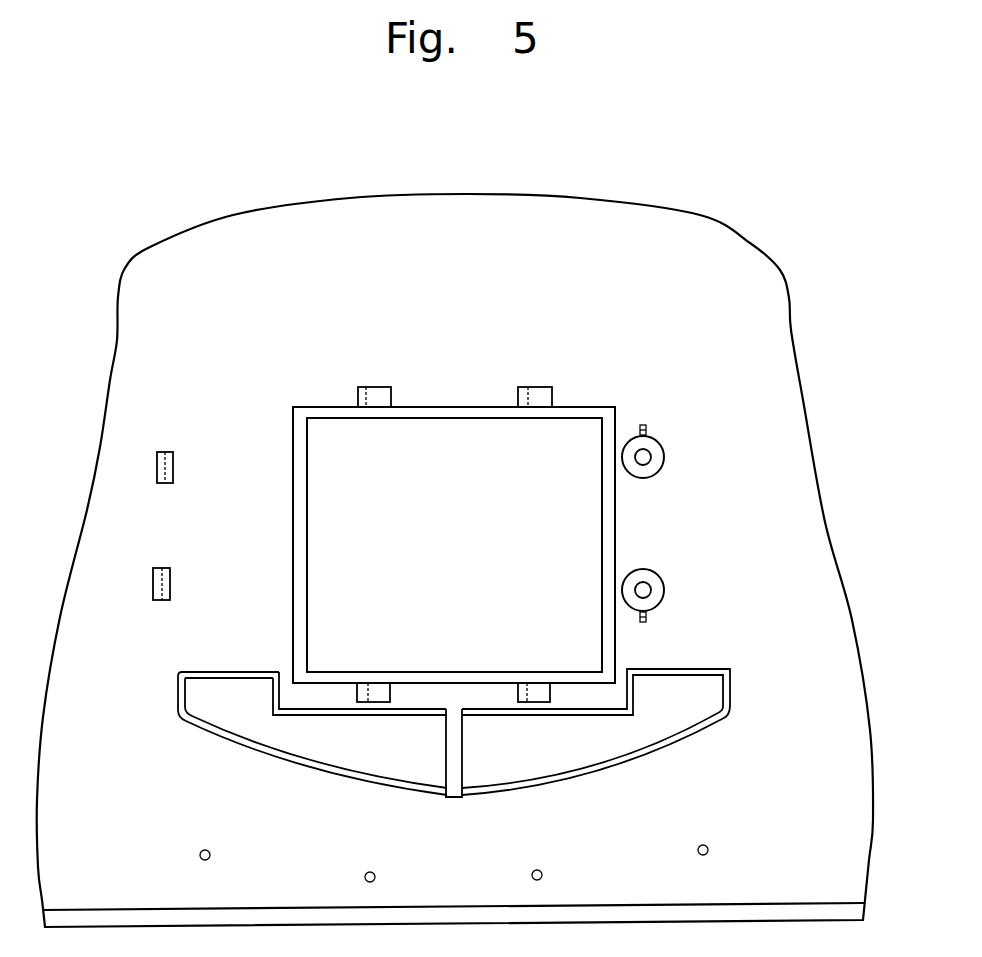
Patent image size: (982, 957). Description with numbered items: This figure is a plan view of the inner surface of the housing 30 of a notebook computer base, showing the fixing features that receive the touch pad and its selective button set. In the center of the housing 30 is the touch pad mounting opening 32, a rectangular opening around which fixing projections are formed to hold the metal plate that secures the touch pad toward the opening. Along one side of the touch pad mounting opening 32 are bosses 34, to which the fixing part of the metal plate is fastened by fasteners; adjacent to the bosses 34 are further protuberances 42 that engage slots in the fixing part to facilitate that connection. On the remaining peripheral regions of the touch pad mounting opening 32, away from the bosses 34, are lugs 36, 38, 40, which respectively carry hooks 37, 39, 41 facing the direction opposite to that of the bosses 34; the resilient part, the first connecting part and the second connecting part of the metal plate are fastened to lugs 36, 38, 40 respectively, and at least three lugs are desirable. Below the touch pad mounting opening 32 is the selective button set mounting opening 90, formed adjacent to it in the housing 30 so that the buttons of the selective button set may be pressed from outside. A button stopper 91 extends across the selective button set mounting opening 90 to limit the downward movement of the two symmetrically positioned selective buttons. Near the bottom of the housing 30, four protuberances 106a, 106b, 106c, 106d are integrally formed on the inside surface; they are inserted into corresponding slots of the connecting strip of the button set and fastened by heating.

The housing 30 is at (813, 527).
The touch pad mounting opening 32 is at (481, 428).
The bosses 34 is at (666, 456).
The lug 36 is at (170, 451).
The hook 37 is at (160, 451).
The lug 38 is at (385, 387).
The hook 39 is at (362, 387).
The lug 40 is at (378, 702).
The hook 41 is at (362, 702).
The protuberances 42 is at (644, 425).
The selective button set mounting opening 90 is at (627, 742).
The button stopper 91 is at (453, 783).
The protuberance 106a is at (209, 851).
The protuberance 106b is at (365, 877).
The protuberance 106c is at (541, 871).
The protuberance 106d is at (707, 846).